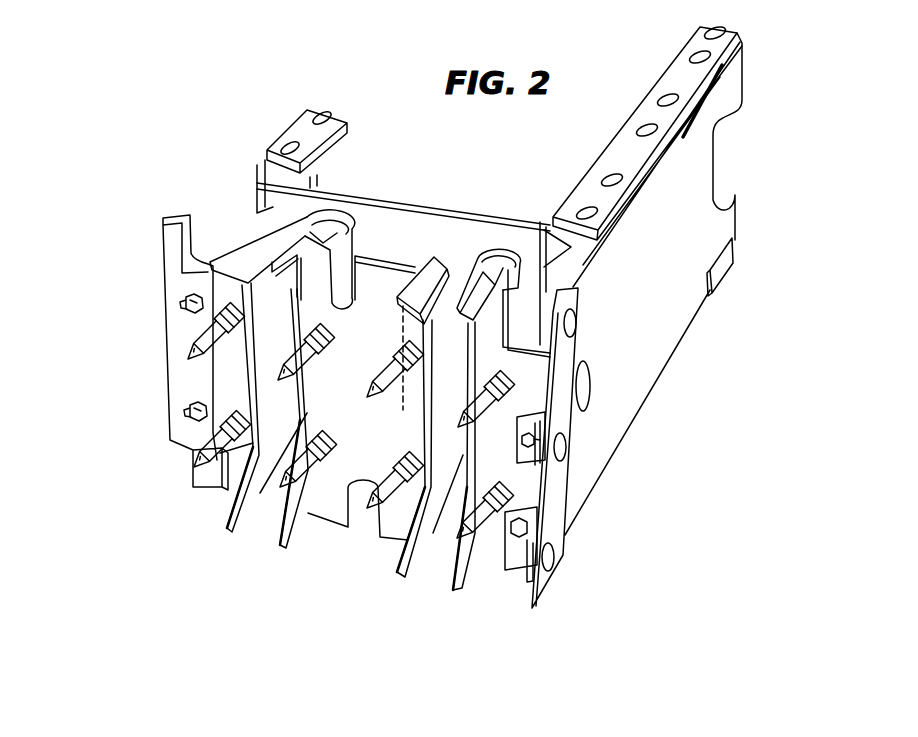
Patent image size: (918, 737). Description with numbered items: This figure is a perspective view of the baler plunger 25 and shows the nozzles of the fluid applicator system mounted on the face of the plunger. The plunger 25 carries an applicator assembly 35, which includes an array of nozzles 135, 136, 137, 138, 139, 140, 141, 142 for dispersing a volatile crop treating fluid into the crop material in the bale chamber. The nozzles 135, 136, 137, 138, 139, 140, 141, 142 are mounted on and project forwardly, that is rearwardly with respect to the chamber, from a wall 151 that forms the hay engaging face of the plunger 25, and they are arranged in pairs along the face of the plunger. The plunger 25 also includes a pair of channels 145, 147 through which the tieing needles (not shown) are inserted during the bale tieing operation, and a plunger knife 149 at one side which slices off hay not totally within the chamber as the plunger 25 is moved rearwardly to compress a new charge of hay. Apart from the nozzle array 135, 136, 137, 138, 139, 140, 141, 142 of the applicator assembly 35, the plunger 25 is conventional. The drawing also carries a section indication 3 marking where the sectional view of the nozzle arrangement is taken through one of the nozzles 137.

The plunger 25 is at (724, 311).
The applicator assembly 35 is at (135, 388).
The nozzle 135 is at (200, 333).
The nozzle 136 is at (302, 360).
The nozzle 137 is at (368, 388).
The nozzle 138 is at (503, 394).
The nozzle 139 is at (200, 449).
The nozzle 140 is at (300, 466).
The nozzle 141 is at (388, 505).
The nozzle 142 is at (468, 528).
The channel 145 is at (333, 227).
The channel 147 is at (490, 262).
The plunger knife 149 is at (537, 584).
The wall 151 is at (391, 279).
The section line 3- 3 is at (395, 318).